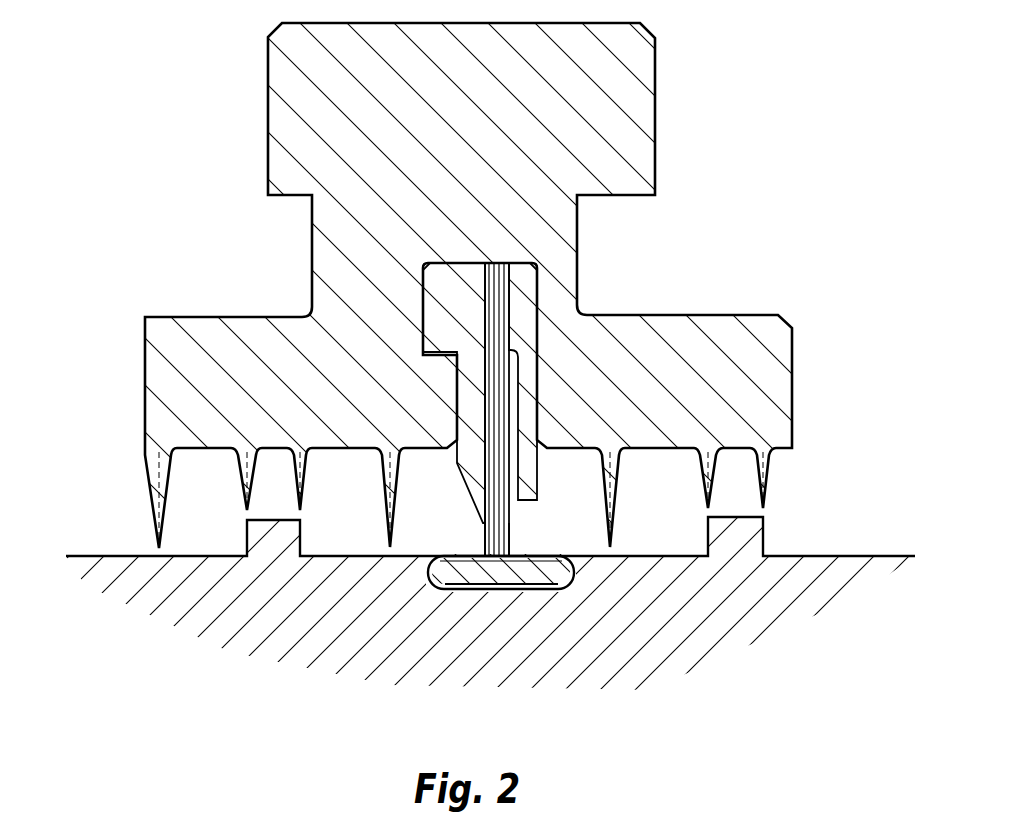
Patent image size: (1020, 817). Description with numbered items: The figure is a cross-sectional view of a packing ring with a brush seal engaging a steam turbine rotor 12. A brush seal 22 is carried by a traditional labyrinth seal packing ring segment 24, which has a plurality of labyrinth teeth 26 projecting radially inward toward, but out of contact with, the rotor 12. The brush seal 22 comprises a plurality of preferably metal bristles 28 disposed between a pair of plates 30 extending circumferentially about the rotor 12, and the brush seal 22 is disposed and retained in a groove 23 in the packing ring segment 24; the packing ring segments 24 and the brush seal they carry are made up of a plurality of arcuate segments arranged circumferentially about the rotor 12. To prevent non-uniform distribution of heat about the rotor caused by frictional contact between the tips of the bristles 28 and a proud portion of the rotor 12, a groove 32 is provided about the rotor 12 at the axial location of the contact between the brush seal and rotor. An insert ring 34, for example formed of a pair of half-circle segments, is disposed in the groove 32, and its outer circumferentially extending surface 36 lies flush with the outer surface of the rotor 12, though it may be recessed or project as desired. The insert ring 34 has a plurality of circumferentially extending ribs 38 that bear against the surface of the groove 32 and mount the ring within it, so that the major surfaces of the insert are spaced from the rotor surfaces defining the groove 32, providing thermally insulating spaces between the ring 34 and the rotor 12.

The rotor 12 is at (120, 556).
The brush seal 22 is at (540, 295).
The groove 23 is at (531, 395).
The labyrinth seal packing ring segment 24 is at (312, 225).
The labyrinth teeth 26 is at (160, 482).
The bristles 28 is at (490, 428).
The plates 30 is at (457, 391).
The groove 32 is at (492, 587).
The insert ring 34 is at (432, 572).
The outer circumferentially extending surface 36 is at (481, 553).
The ribs 38 is at (438, 590).